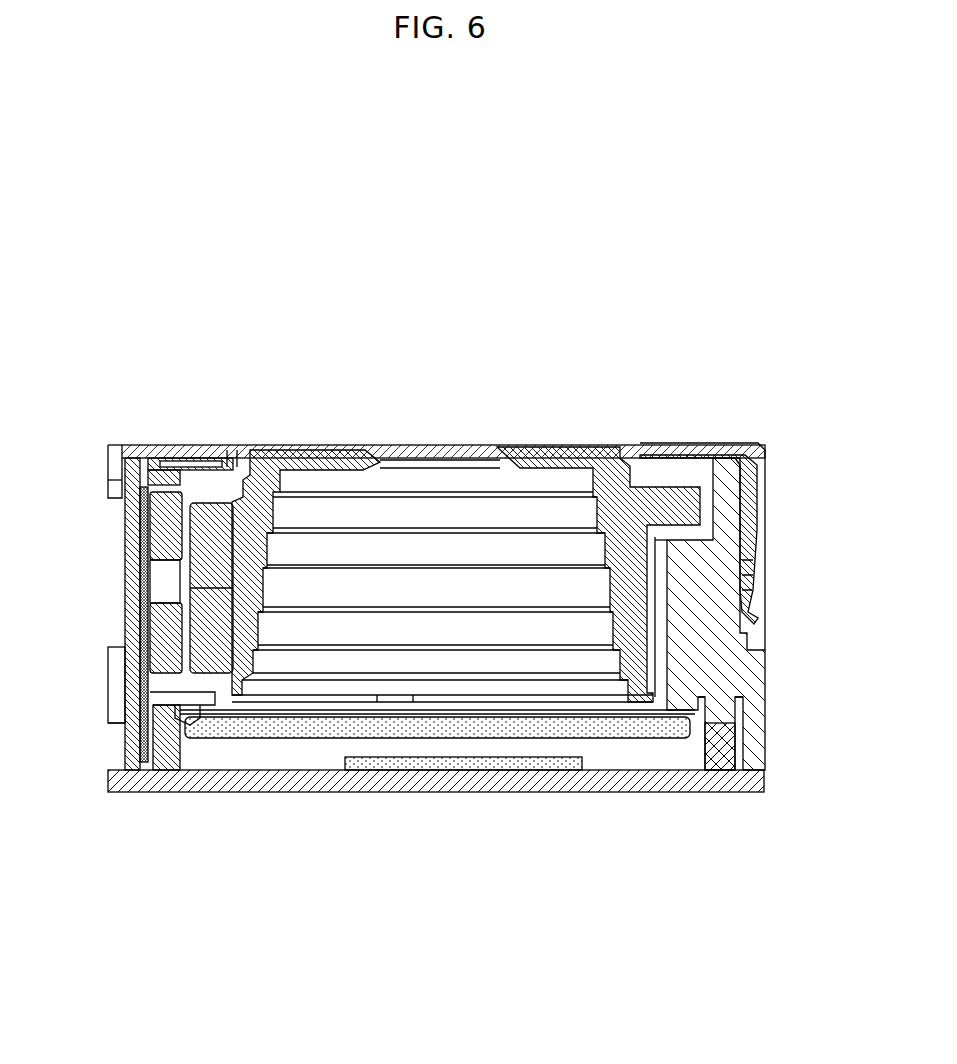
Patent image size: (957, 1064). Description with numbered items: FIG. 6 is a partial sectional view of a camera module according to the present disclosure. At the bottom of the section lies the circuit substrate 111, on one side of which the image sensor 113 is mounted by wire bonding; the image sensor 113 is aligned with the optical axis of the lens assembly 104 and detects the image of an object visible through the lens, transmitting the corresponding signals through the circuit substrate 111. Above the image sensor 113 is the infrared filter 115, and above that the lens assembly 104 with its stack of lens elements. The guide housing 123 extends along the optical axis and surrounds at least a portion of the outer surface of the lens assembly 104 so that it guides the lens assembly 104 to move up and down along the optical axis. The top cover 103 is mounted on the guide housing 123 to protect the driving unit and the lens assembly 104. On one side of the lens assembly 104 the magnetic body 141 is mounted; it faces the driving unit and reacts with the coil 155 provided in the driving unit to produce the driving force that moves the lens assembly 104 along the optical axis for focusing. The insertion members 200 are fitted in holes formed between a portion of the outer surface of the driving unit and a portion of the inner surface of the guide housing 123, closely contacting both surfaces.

The insertion member 200 is at (188, 467).
The lens assembly 104 is at (606, 470).
The top cover 103 is at (748, 446).
The magnetic body 141 is at (207, 560).
The coil 155 is at (162, 647).
The guide housing 123 is at (754, 667).
The image sensor 113 is at (483, 763).
The infrared filter 115 is at (600, 735).
The circuit substrate 111 is at (727, 780).